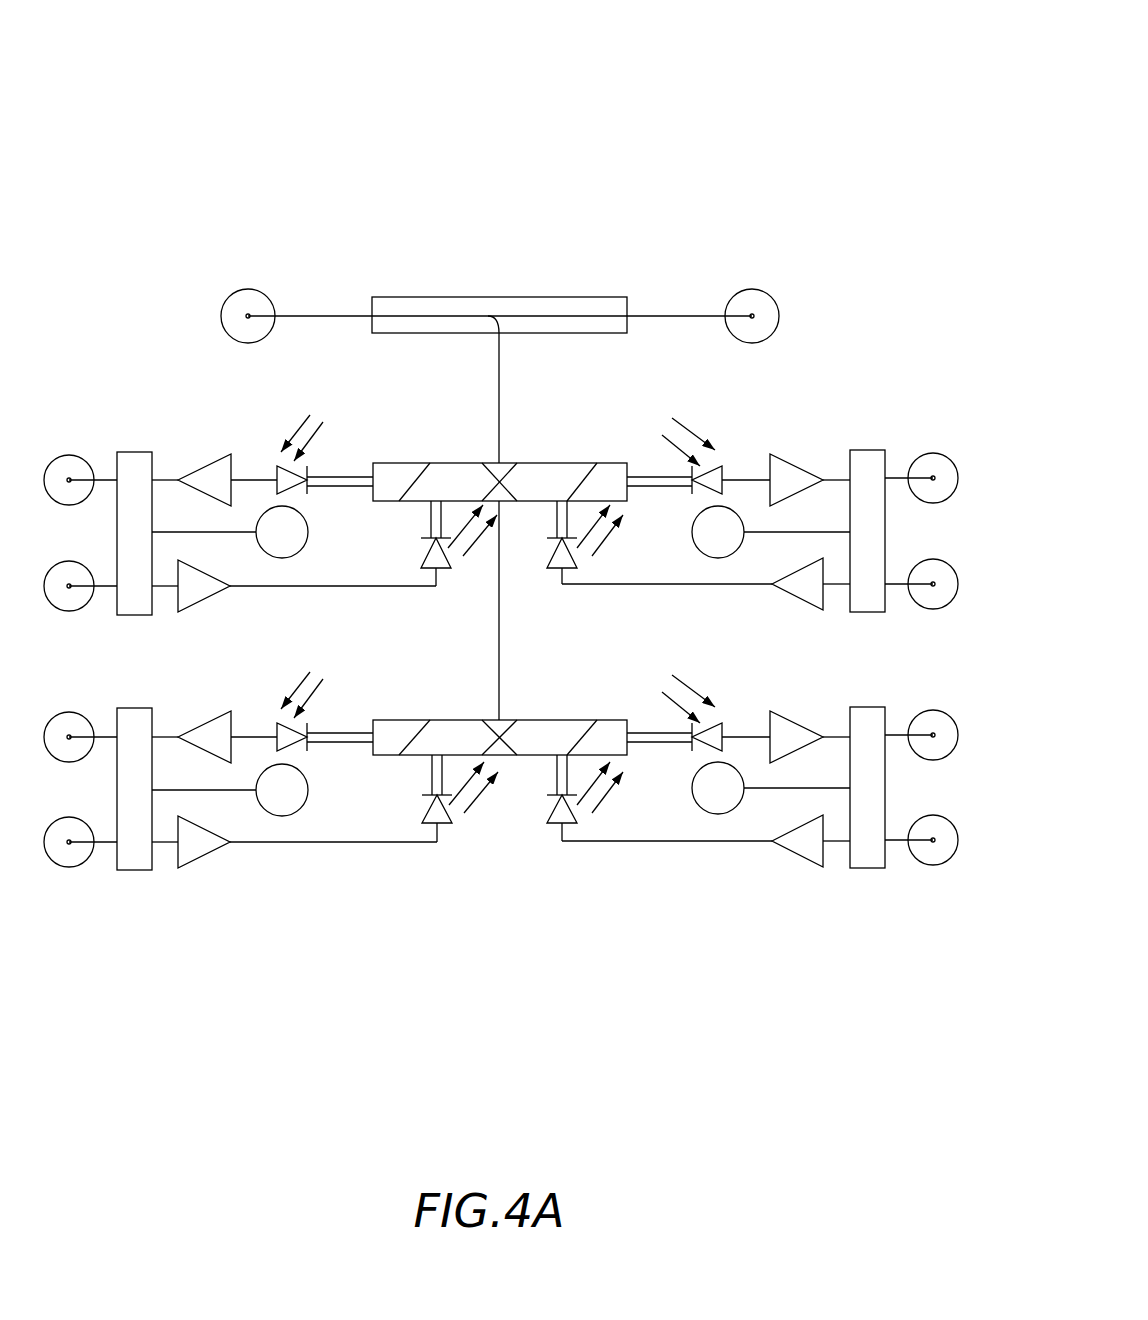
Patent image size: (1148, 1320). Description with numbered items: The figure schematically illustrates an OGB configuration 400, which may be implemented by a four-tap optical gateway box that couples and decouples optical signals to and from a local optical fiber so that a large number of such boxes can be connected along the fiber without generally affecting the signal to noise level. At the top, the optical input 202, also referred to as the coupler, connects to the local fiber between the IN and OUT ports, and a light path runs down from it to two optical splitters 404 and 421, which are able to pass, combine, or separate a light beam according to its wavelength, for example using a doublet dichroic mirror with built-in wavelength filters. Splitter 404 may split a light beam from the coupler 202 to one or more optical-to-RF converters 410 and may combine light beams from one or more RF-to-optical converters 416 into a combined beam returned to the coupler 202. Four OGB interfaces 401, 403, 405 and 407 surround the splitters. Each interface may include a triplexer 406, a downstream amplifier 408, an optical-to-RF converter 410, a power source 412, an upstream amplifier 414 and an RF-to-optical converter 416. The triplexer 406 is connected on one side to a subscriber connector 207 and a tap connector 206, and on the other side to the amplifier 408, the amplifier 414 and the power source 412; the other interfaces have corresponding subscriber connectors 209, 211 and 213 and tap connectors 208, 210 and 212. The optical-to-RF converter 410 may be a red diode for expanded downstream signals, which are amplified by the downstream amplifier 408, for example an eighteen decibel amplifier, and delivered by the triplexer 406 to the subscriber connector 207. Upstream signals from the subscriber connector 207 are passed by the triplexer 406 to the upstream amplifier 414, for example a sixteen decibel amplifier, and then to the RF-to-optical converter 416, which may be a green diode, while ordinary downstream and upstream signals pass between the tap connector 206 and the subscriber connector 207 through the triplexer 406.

The OGB configuration 400 is at (683, 104).
The OGB interface 401 is at (90, 320).
The OGB interface 403 is at (90, 920).
The OGB interface 405 is at (912, 332).
The OGB interface 407 is at (912, 920).
The optical input 202 is at (630, 298).
The optical splitter 404 is at (558, 462).
The optical splitter 421 is at (490, 756).
The triplexer 406 is at (131, 452).
The subscriber connector 207 is at (68, 455).
The tap connector 206 is at (69, 561).
The tap connector 208 is at (69, 817).
The subscriber connector 209 is at (69, 711).
The tap connector 210 is at (933, 559).
The subscriber connector 211 is at (933, 453).
The tap connector 212 is at (933, 815).
The subscriber connector 213 is at (933, 709).
The downstream amplifier 408 is at (204, 458).
The optical-to-RF converter 410 is at (308, 467).
The power source 412 is at (309, 530).
The upstream amplifier 414 is at (206, 601).
The RF-to-optical converter 416 is at (445, 552).